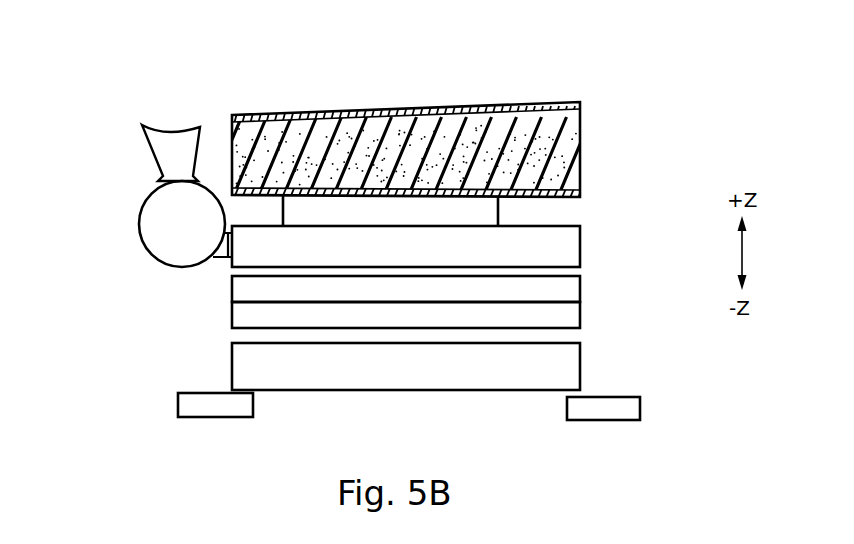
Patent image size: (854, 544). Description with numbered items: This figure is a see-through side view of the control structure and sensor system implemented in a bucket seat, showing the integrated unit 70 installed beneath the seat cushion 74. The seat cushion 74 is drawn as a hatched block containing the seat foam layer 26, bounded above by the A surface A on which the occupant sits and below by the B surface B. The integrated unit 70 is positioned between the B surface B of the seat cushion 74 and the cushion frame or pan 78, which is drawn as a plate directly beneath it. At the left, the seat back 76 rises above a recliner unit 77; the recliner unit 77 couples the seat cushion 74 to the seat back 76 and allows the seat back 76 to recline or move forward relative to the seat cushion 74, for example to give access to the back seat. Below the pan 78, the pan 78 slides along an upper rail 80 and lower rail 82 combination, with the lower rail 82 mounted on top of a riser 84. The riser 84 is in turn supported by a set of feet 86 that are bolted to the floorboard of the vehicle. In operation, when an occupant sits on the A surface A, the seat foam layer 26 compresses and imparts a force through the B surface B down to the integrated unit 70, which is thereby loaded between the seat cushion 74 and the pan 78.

The seat cushion 74 is at (147, 62).
The seat foam layer 26 is at (357, 133).
The A surface A is at (540, 102).
The B surface B is at (565, 200).
The integrated unit 70 is at (500, 205).
The seat back 76 is at (172, 162).
The recliner unit 77 is at (140, 247).
The cushion pan 78 is at (572, 257).
The upper rail 80 is at (245, 289).
The lower rail 82 is at (247, 315).
The riser 84 is at (572, 362).
The feet 86 is at (197, 403).